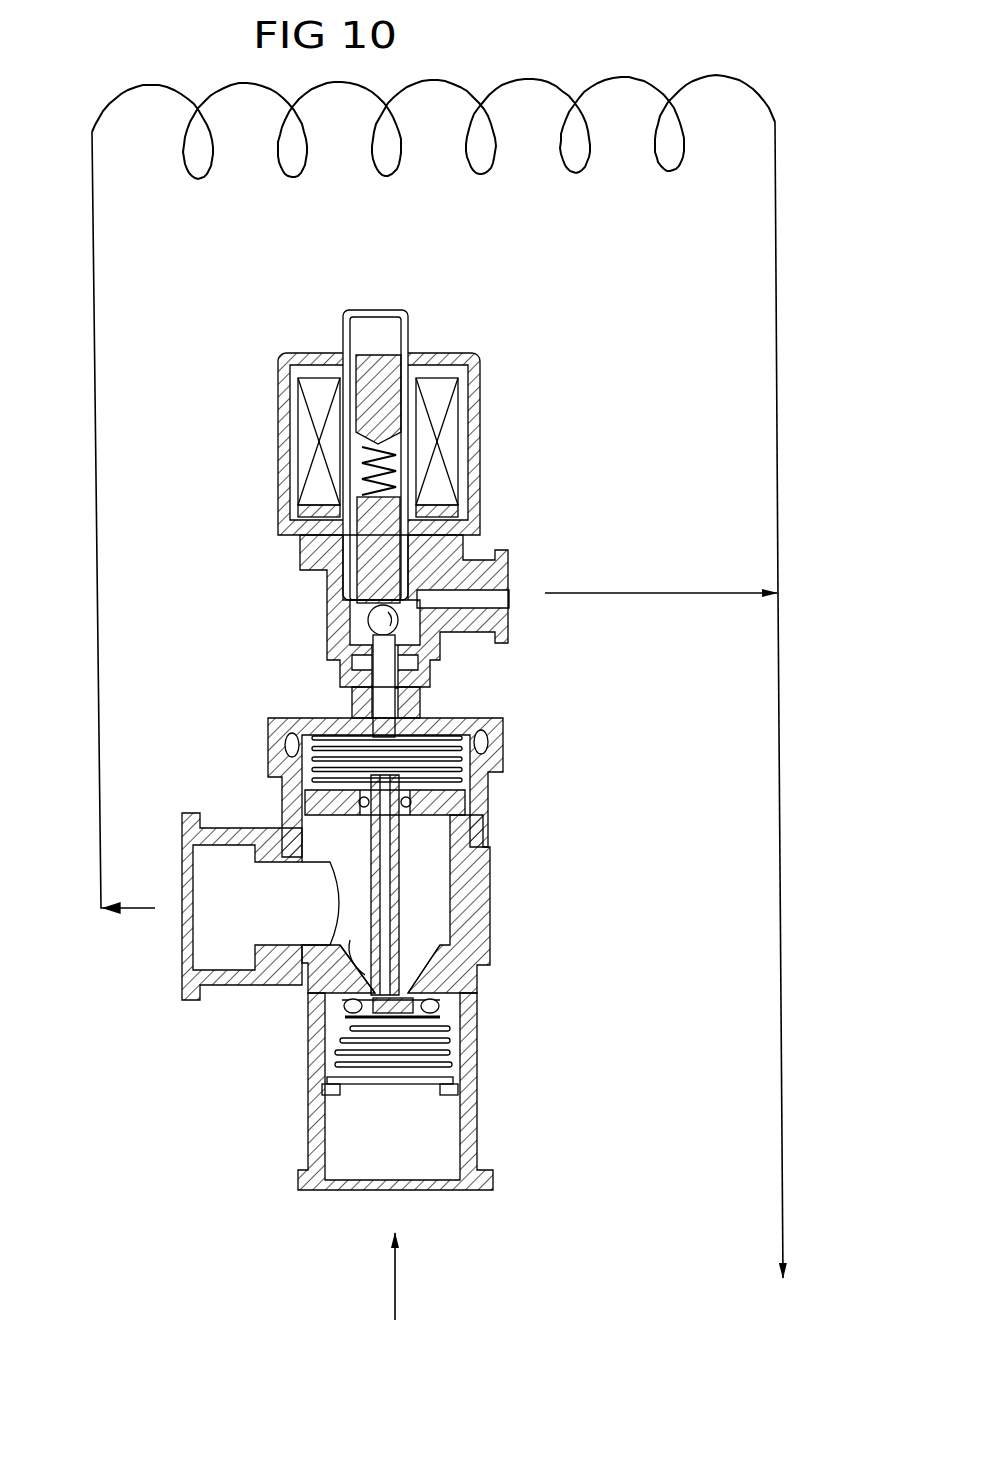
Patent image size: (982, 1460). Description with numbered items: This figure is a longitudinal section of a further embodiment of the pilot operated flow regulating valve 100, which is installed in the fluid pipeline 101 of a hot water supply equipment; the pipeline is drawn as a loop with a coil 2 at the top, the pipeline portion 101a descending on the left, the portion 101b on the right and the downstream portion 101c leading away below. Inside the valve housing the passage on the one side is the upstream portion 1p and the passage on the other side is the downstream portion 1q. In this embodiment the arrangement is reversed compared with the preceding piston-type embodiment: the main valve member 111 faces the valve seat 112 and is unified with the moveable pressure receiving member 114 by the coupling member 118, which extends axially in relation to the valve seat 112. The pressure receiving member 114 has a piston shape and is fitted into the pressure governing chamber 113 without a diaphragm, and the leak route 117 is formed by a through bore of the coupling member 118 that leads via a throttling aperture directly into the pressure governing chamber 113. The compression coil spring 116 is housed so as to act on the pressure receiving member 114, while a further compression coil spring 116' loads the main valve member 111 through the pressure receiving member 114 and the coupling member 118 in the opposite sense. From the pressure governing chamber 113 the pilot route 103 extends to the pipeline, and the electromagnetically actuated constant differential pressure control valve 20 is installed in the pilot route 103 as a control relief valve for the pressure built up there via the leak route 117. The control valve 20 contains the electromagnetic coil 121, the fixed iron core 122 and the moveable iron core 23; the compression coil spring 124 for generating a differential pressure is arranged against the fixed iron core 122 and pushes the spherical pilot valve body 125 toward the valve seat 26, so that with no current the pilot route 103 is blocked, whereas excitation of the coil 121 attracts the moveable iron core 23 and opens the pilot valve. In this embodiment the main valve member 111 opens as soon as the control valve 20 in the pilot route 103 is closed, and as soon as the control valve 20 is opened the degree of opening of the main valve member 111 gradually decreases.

The coil / heat exchanger tubing 2 is at (507, 152).
The constant differential pressure control valve 20 is at (427, 452).
The moveable iron core 23 is at (376, 570).
The valve seat 26 is at (402, 625).
The pilot operated flow regulating valve 100 is at (376, 930).
The fluid pipeline 101 is at (398, 1280).
The portion of fluid pipeline 101a is at (97, 343).
The portion of fluid pipeline 101b is at (661, 357).
The downstream portion of pipeline 101c is at (779, 1000).
The pilot route 103 is at (417, 693).
The main valve member 111 is at (443, 1005).
The valve seat 112 is at (340, 1003).
The pressure governing chamber 113 is at (470, 778).
The moveable pressure receiving member 114 is at (448, 810).
The compression coil spring 116 is at (450, 1060).
The compression coil spring 116' is at (267, 713).
The leak route 117 is at (428, 992).
The coupling member 118 is at (400, 893).
The electromagnetic coil 121 is at (452, 467).
The fixed iron core 122 is at (383, 372).
The compression coil spring 124 is at (413, 447).
The spherical pilot valve body 125 is at (352, 637).
The upstream portion 1p is at (440, 1152).
The downstream portion 1q is at (235, 953).